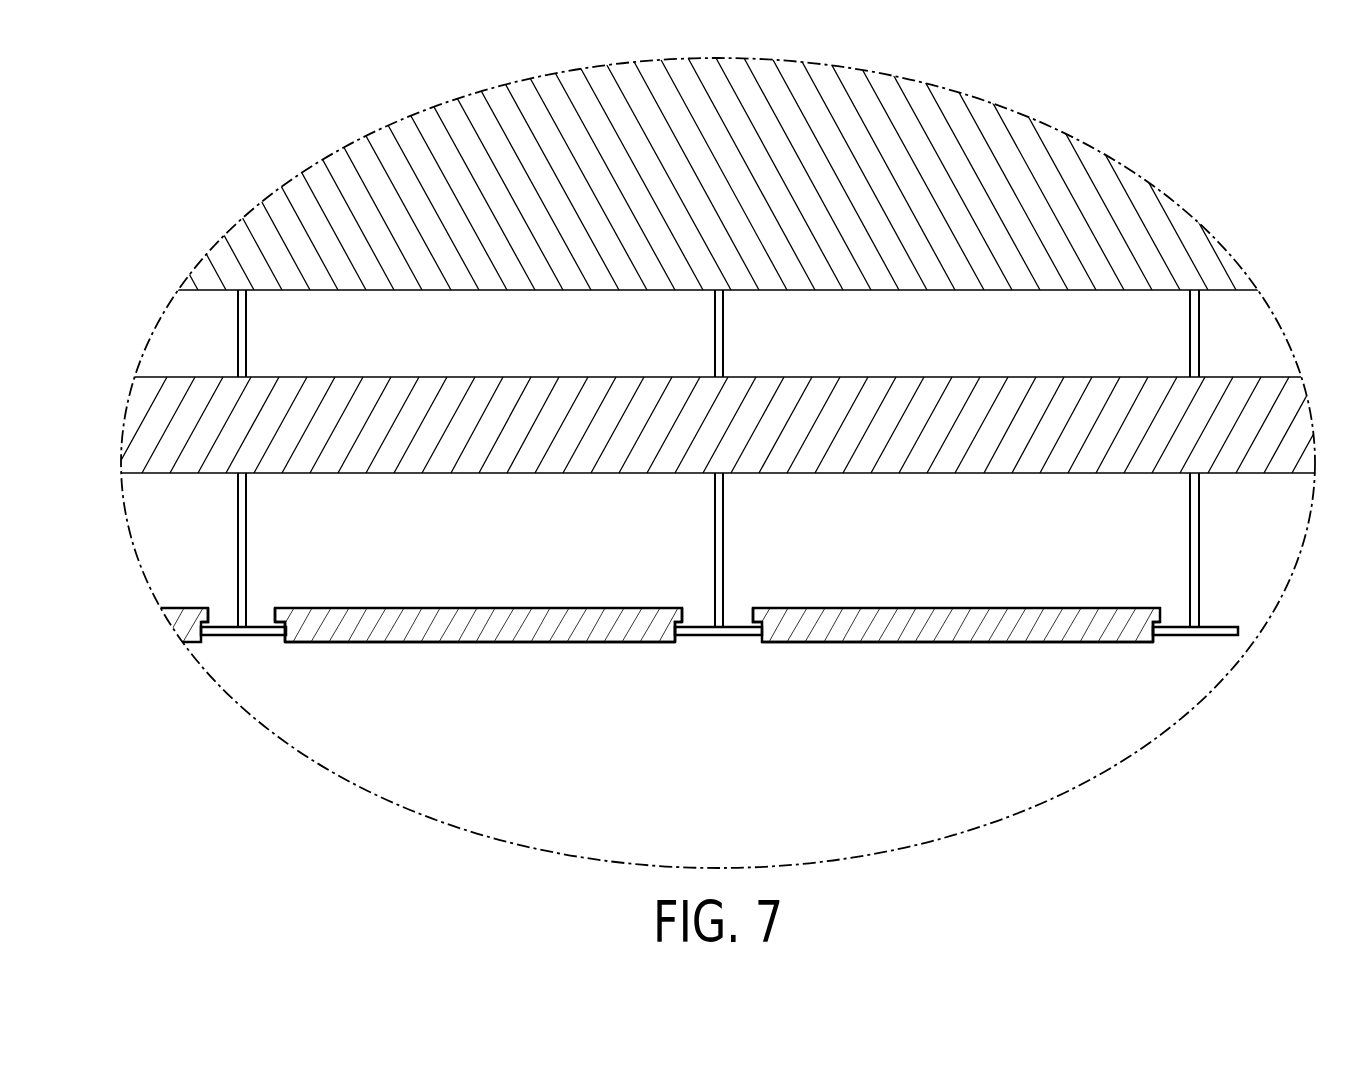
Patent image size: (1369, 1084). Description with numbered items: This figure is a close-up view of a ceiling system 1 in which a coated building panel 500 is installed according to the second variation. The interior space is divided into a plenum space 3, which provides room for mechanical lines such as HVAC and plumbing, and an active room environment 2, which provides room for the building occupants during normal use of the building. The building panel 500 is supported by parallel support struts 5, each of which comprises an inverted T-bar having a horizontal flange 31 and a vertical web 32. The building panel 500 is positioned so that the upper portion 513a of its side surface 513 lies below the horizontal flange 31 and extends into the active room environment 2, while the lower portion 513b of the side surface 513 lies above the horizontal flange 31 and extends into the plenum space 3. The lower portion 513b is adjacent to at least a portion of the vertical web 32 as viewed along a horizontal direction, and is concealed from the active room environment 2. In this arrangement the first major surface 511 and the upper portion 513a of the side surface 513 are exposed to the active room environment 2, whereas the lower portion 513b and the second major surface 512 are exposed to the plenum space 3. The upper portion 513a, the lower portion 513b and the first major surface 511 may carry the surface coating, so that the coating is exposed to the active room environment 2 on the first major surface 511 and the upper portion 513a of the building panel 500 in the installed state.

The ceiling system 1 is at (148, 211).
The active room environment 2 is at (190, 339).
The plenum space 3 is at (416, 775).
The support strut 5 is at (1200, 351).
The horizontal flange 31 is at (231, 637).
The vertical web 32 is at (243, 511).
The building panel 500 is at (670, 661).
The first major surface 511 is at (353, 643).
The second major surface 512 is at (443, 608).
The side surface 513 is at (1162, 617).
The upper portion of the side surface 513a is at (280, 639).
The lower portion of the side surface 513b is at (277, 623).